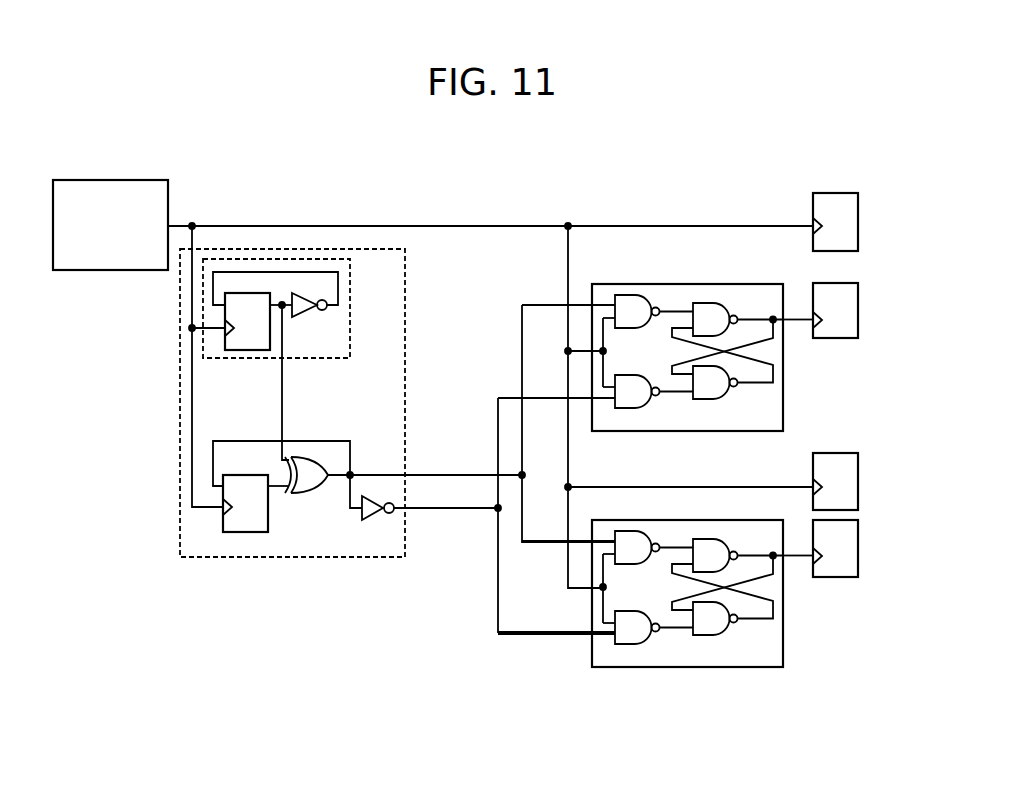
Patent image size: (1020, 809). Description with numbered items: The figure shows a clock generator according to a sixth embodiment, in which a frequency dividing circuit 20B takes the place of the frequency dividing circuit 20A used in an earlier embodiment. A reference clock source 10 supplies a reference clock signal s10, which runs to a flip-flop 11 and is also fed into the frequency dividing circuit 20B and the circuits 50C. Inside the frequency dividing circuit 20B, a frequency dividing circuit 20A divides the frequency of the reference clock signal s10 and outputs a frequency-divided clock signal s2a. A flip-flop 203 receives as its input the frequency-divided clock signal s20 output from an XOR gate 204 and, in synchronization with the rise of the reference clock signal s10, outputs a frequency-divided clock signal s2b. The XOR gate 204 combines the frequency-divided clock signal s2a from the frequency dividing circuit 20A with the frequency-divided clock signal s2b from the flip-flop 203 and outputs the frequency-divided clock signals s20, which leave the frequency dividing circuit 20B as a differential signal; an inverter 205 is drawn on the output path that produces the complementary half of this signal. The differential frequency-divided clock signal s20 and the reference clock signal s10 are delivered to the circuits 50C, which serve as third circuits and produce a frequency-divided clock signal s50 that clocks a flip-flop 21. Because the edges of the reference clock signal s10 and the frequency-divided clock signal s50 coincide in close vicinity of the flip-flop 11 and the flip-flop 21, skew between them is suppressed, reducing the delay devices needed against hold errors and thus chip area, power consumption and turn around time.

The reference clock source 10 is at (125, 180).
The reference clock signal s10 is at (478, 226).
The flip-flop 11 is at (858, 225).
The flip-flop 21 is at (858, 305).
The frequency dividing circuit 20A is at (235, 358).
The frequency dividing circuit 20B is at (235, 557).
The frequency-divided clock signal s2a is at (282, 395).
The frequency-divided clock signal s2b is at (290, 483).
The frequency-divided clock signal s20 is at (245, 441).
The flip-flop 203 is at (270, 525).
The XOR gate 204 is at (320, 493).
The inverter 205 is at (375, 520).
The circuit 50C is at (706, 520).
The frequency-divided clock signal s50 is at (800, 320).